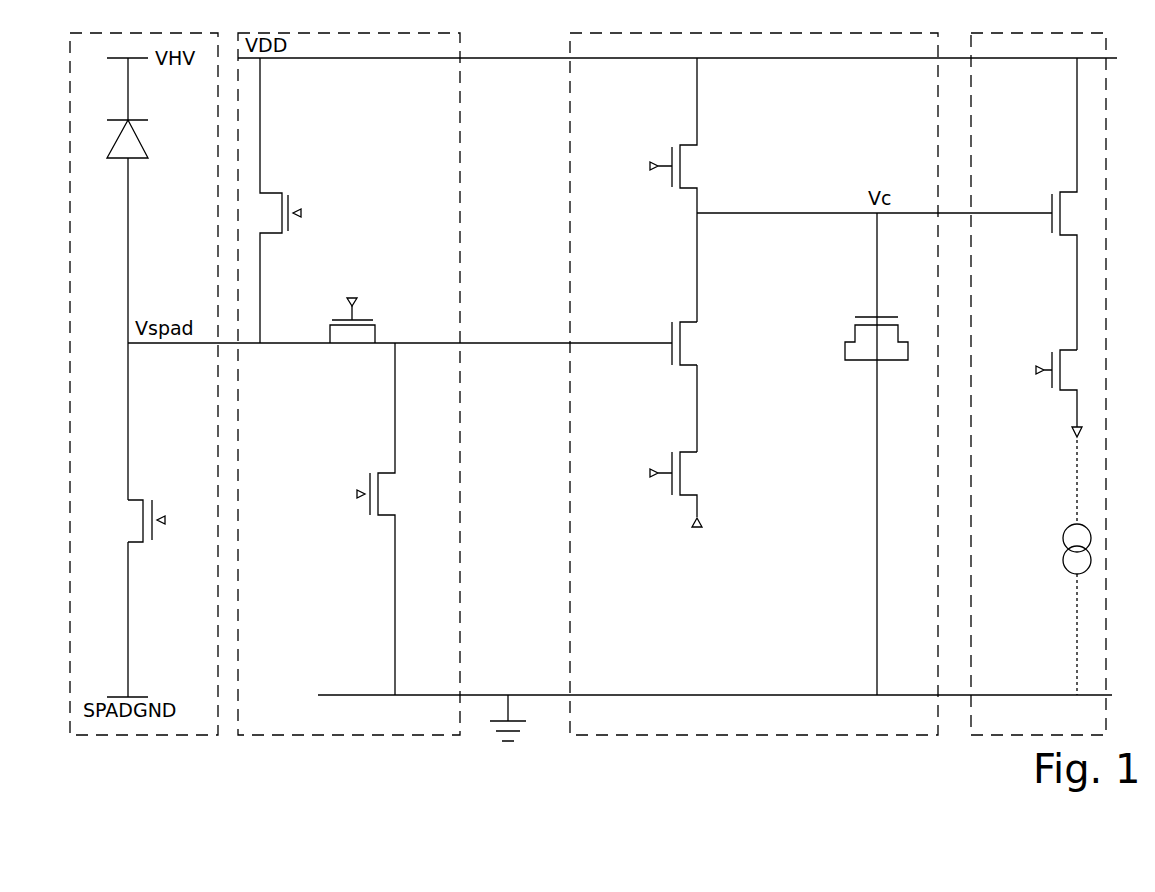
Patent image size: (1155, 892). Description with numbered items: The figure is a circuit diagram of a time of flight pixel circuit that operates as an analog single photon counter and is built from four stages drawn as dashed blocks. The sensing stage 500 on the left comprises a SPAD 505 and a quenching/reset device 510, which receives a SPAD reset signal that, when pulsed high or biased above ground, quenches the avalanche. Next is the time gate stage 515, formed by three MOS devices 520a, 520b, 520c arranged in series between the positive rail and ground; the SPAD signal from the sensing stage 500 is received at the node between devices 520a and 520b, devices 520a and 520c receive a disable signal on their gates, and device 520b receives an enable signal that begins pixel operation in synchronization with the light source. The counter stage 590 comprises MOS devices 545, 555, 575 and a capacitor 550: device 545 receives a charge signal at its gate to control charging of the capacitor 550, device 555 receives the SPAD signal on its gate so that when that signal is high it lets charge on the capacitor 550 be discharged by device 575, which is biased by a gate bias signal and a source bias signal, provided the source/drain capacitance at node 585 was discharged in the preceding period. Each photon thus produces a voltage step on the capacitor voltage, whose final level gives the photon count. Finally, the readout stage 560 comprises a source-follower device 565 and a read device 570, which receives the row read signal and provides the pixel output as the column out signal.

The sensing stage 500 is at (144, 384).
The SPAD 505 is at (143, 155).
The quenching/reset device 510 is at (160, 521).
The time gate stage 515 is at (349, 384).
The MOS device 520a is at (302, 200).
The MOS device 520b is at (355, 318).
The MOS device 520c is at (358, 519).
The MOS device 545 is at (675, 190).
The capacitor 550 is at (859, 338).
The MOS device 555 is at (704, 343).
The readout stage 560 is at (1038, 384).
The source-follower device 565 is at (1078, 204).
The read device 570 is at (1039, 400).
The MOS device 575 is at (660, 503).
The node 585 is at (700, 402).
The counter stage 590 is at (754, 384).